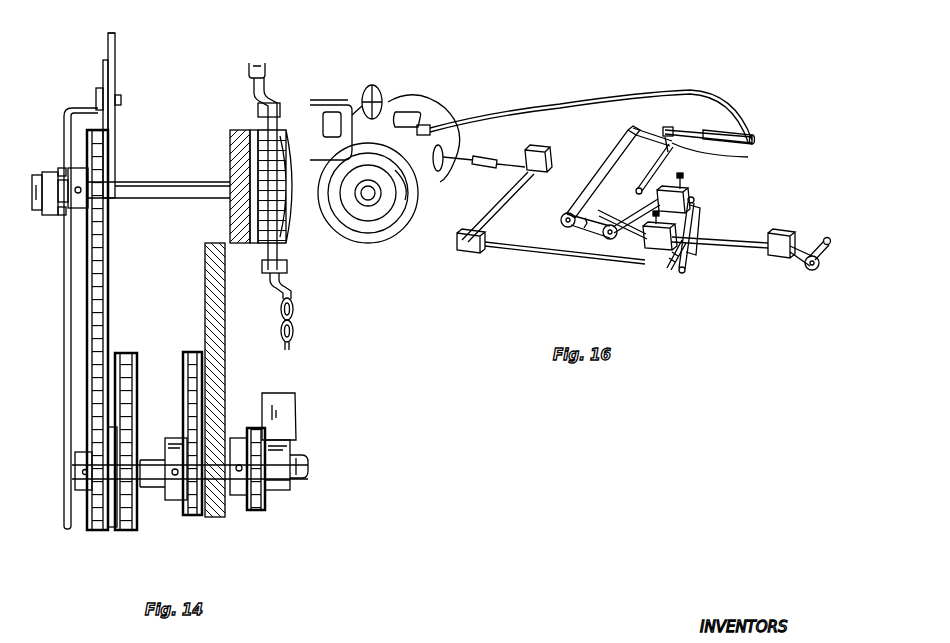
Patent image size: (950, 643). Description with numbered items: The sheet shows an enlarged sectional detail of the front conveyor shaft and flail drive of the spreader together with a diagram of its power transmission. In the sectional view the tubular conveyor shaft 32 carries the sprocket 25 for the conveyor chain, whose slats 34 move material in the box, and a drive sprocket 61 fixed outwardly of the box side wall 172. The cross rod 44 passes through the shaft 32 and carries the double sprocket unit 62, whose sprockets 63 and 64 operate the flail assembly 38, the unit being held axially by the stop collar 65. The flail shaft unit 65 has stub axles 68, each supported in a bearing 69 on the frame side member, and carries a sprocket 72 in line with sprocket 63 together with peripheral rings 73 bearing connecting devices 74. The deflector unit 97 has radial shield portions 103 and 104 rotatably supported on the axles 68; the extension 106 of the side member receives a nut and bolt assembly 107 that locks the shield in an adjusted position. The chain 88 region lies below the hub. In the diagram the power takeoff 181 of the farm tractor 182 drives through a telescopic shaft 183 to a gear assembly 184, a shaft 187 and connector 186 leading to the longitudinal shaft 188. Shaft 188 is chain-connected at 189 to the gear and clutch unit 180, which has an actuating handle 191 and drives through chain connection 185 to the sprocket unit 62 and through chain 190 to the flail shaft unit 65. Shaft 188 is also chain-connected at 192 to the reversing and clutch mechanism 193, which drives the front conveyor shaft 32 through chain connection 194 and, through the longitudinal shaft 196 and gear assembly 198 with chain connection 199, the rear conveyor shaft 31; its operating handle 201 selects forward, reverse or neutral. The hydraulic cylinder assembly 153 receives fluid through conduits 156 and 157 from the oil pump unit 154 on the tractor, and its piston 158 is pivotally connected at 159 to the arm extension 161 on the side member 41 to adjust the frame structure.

In FIG. 14, the radial shield portion 104 is at (108, 42).
In FIG. 14, the deflector unit 97 is at (129, 69).
In FIG. 14, the radial shield portion 103 is at (103, 70).
In FIG. 14, the extension 106 is at (82, 110).
In FIG. 14, the nut and bolt assembly 107 is at (121, 100).
In FIG. 14, the bearing 69 is at (46, 172).
In FIG. 14, the stub axle 68 is at (165, 182).
In FIG. 14, the sprocket 72 is at (103, 213).
In FIG. 14, the chain 190 is at (108, 307).
In FIG. 16, the chain 190 is at (585, 232).
In FIG. 14, the chain connection 185 is at (128, 353).
In FIG. 16, the chain connection 185 is at (628, 215).
In FIG. 14, the chain connection 194 is at (190, 428).
In FIG. 16, the chain connection 194 is at (644, 241).
In FIG. 14, the box side wall 172 is at (223, 338).
In FIG. 14, the shaft unit 65 is at (237, 128).
In FIG. 16, the shaft unit 65 is at (572, 203).
In FIG. 14, the connecting device 74 is at (276, 94).
In FIG. 14, the peripheral ring 73 is at (285, 257).
In FIG. 14, the flail assembly 38 is at (301, 288).
In FIG. 14, the chain 88 is at (296, 342).
In FIG. 14, the slat 34 is at (300, 395).
In FIG. 14, the cross rod 44 is at (305, 480).
In FIG. 14, the conveyor shaft 32 is at (285, 490).
In FIG. 16, the conveyor shaft 32 is at (656, 168).
In FIG. 14, the sprocket 25 is at (258, 510).
In FIG. 14, the drive sprocket 61 is at (180, 515).
In FIG. 14, the double sprocket unit 62 is at (118, 538).
In FIG. 16, the double sprocket unit 62 is at (609, 240).
In FIG. 14, the sprocket 63 is at (100, 532).
In FIG. 14, the sprocket 64 is at (135, 528).
In FIG. 16, the farm tractor 182 is at (320, 116).
In FIG. 16, the oil pump unit 154 is at (430, 127).
In FIG. 16, the power takeoff 181 is at (441, 172).
In FIG. 16, the telescopic shaft 183 is at (490, 160).
In FIG. 16, the gear assembly 184 is at (552, 152).
In FIG. 16, the shaft 187 is at (505, 200).
In FIG. 16, the connector box 186 is at (467, 256).
In FIG. 16, the shaft 188 is at (572, 262).
In FIG. 16, the conduit 156 is at (540, 107).
In FIG. 16, the conduit 157 is at (592, 104).
In FIG. 16, the side member 41 is at (638, 128).
In FIG. 16, the pivotal connection 159 is at (669, 127).
In FIG. 16, the piston 158 is at (702, 130).
In FIG. 16, the hydraulic cylinder assembly 153 is at (736, 131).
In FIG. 16, the arm extension 161 is at (725, 155).
In FIG. 16, the actuating handle 191 is at (684, 177).
In FIG. 16, the gear and clutch unit 180 is at (684, 192).
In FIG. 16, the operating handle 201 is at (698, 222).
In FIG. 16, the chain connection 189 is at (692, 238).
In FIG. 16, the gear assembly 198 is at (784, 232).
In FIG. 16, the conveyor shaft 31 is at (818, 241).
In FIG. 16, the shaft 196 is at (745, 250).
In FIG. 16, the chain connection 199 is at (806, 271).
In FIG. 16, the reversing and clutch mechanism 193 is at (655, 250).
In FIG. 16, the chain connection 192 is at (679, 258).